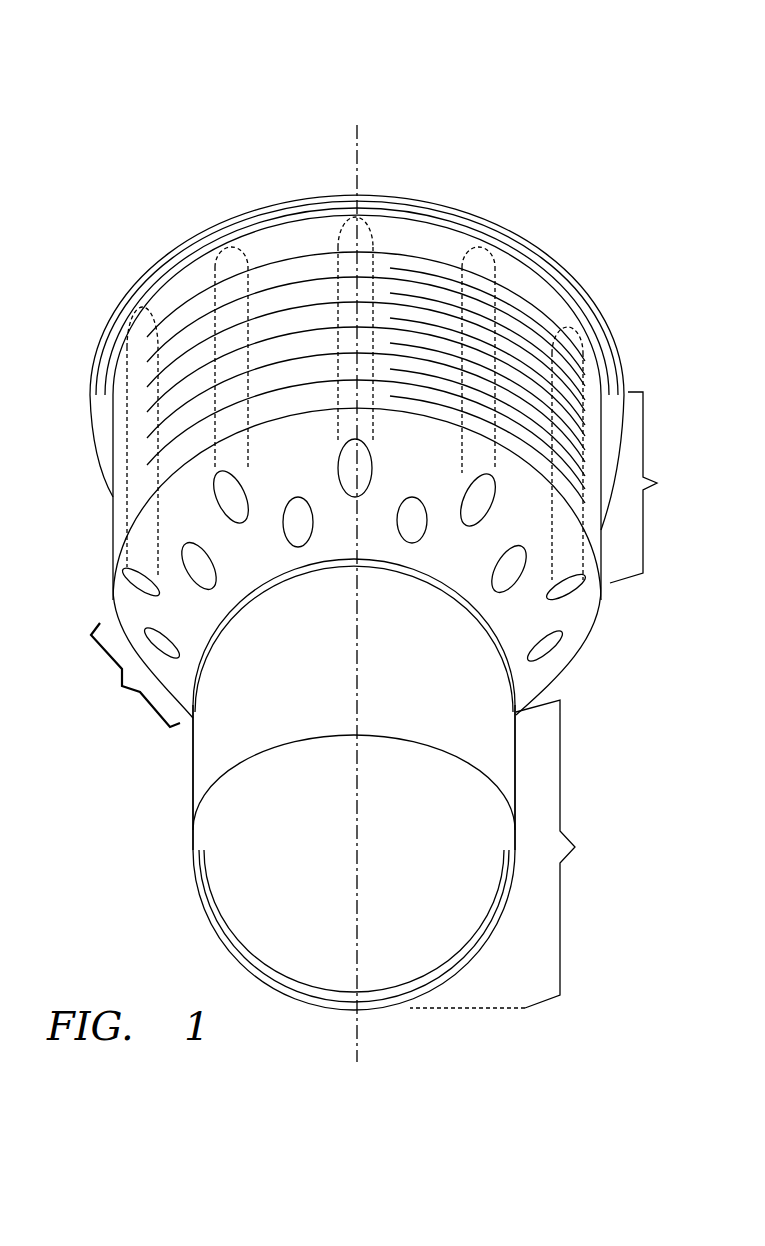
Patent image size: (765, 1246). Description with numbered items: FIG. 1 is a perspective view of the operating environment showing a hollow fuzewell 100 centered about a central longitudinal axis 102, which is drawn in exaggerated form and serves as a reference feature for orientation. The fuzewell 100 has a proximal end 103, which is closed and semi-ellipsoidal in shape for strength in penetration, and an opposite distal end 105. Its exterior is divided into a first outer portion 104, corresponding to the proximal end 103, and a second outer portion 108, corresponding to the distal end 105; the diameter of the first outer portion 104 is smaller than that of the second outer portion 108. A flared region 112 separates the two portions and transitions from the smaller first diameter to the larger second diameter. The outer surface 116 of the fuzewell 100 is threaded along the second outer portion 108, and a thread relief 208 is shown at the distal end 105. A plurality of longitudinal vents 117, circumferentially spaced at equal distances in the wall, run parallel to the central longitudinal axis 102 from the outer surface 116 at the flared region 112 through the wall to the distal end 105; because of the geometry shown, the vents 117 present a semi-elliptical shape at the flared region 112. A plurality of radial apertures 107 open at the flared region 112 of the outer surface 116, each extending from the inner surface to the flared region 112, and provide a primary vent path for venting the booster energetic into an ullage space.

The fuzewell 100 is at (100, 198).
The central longitudinal axis 102 is at (362, 160).
The proximal end 103 is at (383, 1024).
The first outer portion 104 is at (407, 868).
The distal end 105 is at (463, 203).
The radial apertures 107 is at (495, 572).
The second outer portion 108 is at (657, 487).
The flared region 112 is at (126, 675).
The outer surface 116 is at (540, 312).
The longitudinal vents 117 is at (338, 490).
The thread relief 208 is at (273, 214).